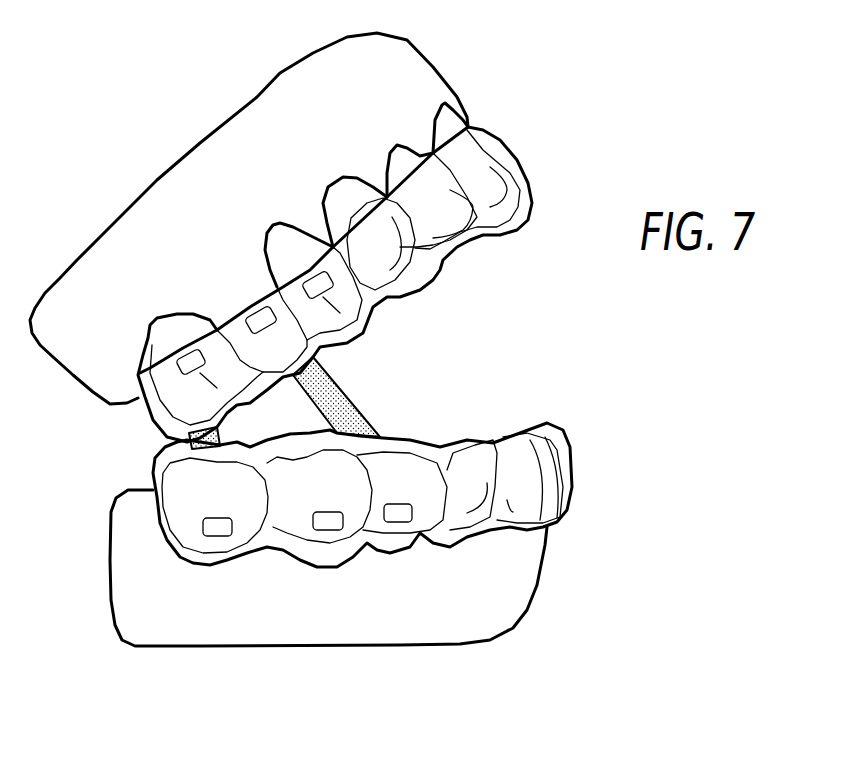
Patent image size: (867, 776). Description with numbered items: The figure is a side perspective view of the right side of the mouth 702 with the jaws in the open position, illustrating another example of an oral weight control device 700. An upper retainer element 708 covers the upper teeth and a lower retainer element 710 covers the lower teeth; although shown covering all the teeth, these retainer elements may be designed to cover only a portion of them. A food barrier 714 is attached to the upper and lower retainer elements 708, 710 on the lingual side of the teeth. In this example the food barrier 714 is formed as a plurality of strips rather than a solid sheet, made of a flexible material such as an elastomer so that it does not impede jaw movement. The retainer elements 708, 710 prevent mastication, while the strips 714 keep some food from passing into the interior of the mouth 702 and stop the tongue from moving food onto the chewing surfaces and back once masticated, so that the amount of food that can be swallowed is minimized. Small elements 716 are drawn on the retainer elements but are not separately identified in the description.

The orthodontic appliance system 700 is at (536, 134).
The mouth 702 is at (219, 196).
The upper retainer element 708 is at (533, 198).
The lower retainer element 710 is at (573, 433).
The food barrier 714 is at (347, 397).
The attachment 716 is at (260, 320).